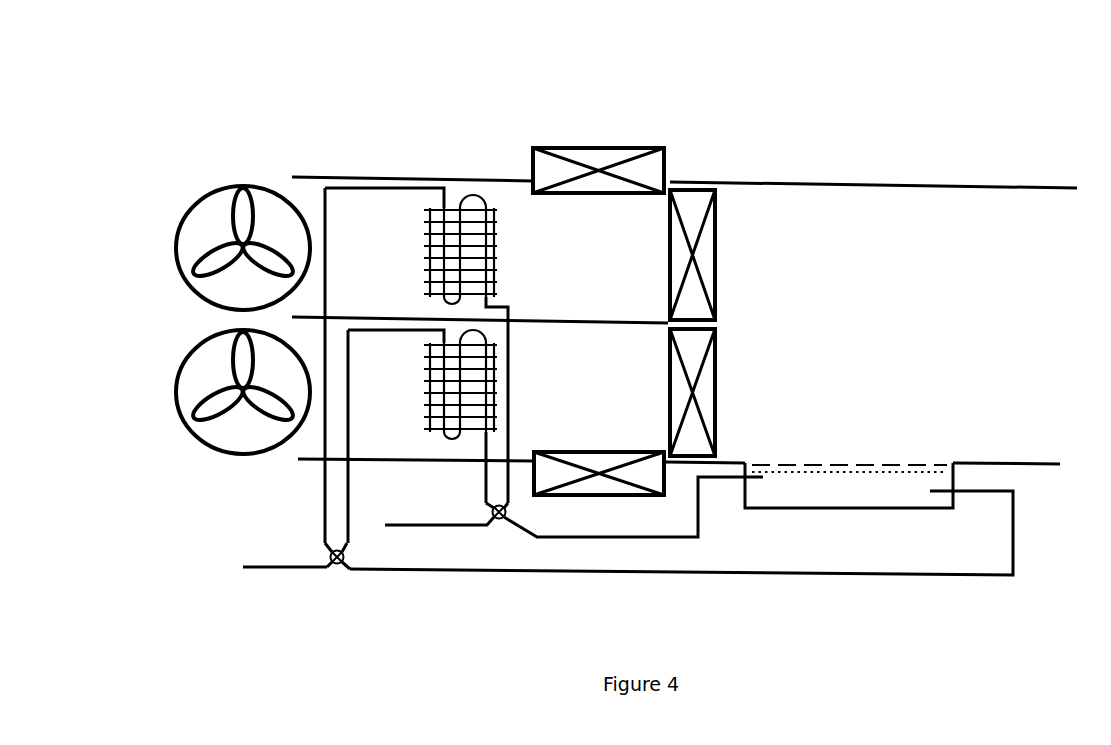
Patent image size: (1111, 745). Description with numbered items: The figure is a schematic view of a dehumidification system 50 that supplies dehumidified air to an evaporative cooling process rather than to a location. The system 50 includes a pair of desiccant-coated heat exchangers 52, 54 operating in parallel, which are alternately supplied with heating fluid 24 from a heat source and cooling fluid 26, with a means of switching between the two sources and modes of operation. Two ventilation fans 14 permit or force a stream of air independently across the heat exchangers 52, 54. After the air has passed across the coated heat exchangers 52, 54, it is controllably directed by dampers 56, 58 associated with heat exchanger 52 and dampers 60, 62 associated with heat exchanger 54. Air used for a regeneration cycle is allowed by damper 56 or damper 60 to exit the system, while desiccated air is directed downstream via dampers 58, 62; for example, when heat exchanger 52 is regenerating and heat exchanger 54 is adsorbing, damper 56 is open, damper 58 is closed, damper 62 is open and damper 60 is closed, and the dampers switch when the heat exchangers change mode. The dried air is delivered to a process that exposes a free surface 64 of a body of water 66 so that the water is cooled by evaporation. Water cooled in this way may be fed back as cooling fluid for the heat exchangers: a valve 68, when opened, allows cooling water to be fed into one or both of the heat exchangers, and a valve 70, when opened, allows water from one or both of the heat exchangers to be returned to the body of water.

The ventilation fan 14 is at (166, 233).
The heating fluid 24 is at (283, 568).
The cooling fluid 26 is at (445, 572).
The system 50 is at (899, 127).
The desiccant-coated heat exchanger 52 is at (401, 266).
The desiccant-coated heat exchanger 54 is at (401, 406).
The damper 56 is at (630, 147).
The damper 58 is at (719, 272).
The damper 60 is at (600, 497).
The damper 62 is at (719, 412).
The free surface 64 is at (868, 471).
The body of water 66 is at (850, 520).
The valve 68 is at (343, 580).
The valve 70 is at (508, 534).